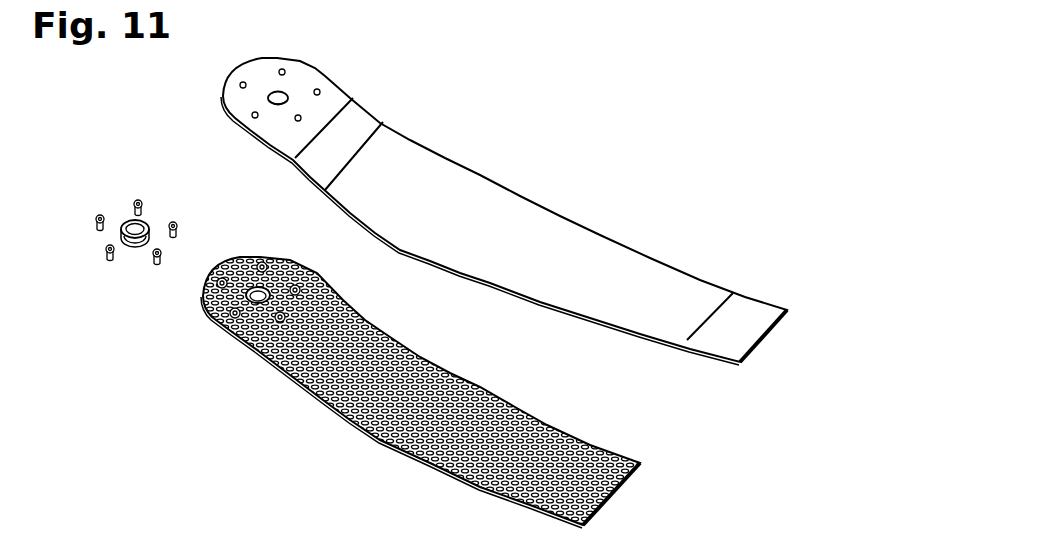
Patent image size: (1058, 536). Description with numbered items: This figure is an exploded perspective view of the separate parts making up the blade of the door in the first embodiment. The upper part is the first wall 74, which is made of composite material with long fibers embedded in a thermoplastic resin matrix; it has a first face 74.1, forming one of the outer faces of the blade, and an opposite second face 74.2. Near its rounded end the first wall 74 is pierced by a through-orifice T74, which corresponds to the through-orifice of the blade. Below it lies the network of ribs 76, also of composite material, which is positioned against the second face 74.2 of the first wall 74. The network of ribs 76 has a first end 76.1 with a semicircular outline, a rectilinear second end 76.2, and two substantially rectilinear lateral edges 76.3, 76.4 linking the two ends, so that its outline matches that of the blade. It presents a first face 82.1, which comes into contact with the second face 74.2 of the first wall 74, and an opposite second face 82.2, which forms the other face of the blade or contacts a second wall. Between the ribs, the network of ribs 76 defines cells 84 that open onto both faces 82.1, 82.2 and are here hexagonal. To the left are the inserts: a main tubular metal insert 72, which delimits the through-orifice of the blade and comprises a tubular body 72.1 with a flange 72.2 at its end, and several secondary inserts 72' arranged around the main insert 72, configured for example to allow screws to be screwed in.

The main insert 72 is at (160, 221).
The secondary inserts 72' is at (160, 206).
The tubular body 72.1 is at (133, 248).
The flange 72.2 is at (126, 225).
The first wall 74 is at (602, 233).
The first face 74.1 is at (545, 306).
The second face 74.2 is at (490, 224).
The through-orifice T74 is at (289, 93).
The network of ribs 76 is at (408, 333).
The first end 76.1 is at (230, 257).
The second end 76.2 is at (612, 498).
The lateral edge 76.3 is at (479, 387).
The lateral edge 76.4 is at (396, 443).
The first face 82.1 is at (309, 393).
The second face 82.2 is at (364, 321).
The cells 84 is at (588, 442).